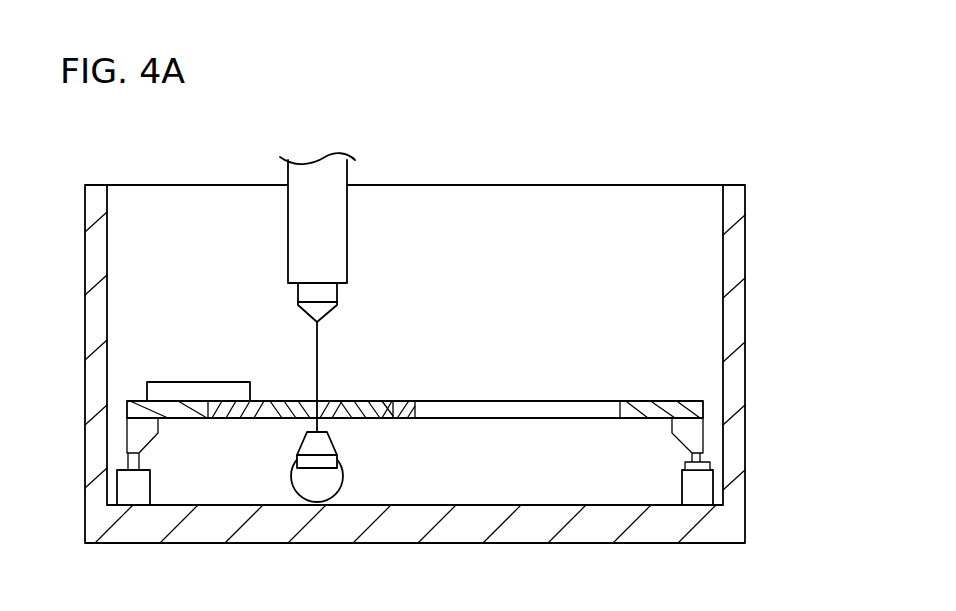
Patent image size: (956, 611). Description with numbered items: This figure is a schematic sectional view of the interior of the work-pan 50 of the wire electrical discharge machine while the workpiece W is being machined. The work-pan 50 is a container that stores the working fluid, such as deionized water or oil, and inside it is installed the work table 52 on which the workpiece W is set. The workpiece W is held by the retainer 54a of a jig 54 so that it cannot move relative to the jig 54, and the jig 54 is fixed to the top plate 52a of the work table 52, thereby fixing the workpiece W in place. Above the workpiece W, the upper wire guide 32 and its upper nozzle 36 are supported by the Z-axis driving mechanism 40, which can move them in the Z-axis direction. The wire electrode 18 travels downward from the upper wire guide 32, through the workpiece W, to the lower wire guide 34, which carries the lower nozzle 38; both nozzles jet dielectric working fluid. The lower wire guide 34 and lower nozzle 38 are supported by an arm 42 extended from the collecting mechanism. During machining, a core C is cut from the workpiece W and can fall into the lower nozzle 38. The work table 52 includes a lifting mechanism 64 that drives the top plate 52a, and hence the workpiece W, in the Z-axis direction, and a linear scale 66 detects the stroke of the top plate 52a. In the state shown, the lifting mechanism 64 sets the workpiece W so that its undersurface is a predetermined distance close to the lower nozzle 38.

The work-pan 50 is at (732, 256).
The work table 52 is at (668, 394).
The top plate 52a is at (647, 400).
The jig 54 is at (187, 378).
The retainer 54a is at (263, 400).
The core C is at (331, 408).
The workpiece W is at (380, 408).
The Z-axis driving mechanism 40 is at (303, 256).
The upper wire guide 32 is at (330, 292).
The upper nozzle 36 is at (309, 308).
The wire electrode 18 is at (320, 337).
The lower nozzle 38 is at (303, 440).
The lower wire guide 34 is at (340, 462).
The arm 42 is at (302, 480).
The lifting mechanism 64 is at (695, 490).
The linear scale 66 is at (688, 466).